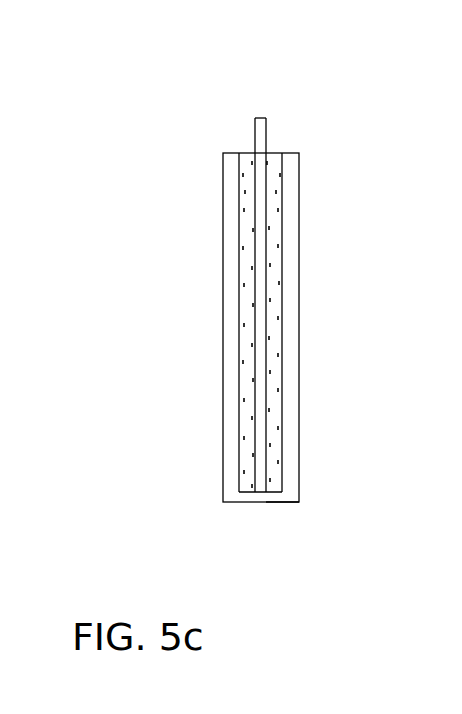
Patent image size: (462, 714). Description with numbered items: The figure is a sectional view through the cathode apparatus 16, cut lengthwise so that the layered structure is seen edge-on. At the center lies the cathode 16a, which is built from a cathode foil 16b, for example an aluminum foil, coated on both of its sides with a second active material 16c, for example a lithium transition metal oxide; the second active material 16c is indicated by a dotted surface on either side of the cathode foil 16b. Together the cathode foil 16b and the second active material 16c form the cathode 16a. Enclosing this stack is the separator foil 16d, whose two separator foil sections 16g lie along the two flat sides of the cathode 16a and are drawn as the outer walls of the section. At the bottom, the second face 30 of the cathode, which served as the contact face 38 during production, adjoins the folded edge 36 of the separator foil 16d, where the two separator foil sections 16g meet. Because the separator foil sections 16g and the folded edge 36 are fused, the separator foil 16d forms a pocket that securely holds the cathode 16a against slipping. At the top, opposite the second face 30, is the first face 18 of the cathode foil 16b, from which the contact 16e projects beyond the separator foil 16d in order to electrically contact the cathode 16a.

The cathode apparatus 16 is at (175, 72).
The cathode 16a is at (264, 276).
The cathode foil 16b is at (261, 367).
The second active material 16c is at (340, 262).
The separator foil 16d is at (264, 322).
The contact 16e is at (259, 119).
The separator foil sections 16g is at (233, 232).
The first face 18 is at (277, 152).
The second face 30 is at (199, 524).
The contact face 38 is at (247, 493).
The folded edge 36 is at (288, 524).